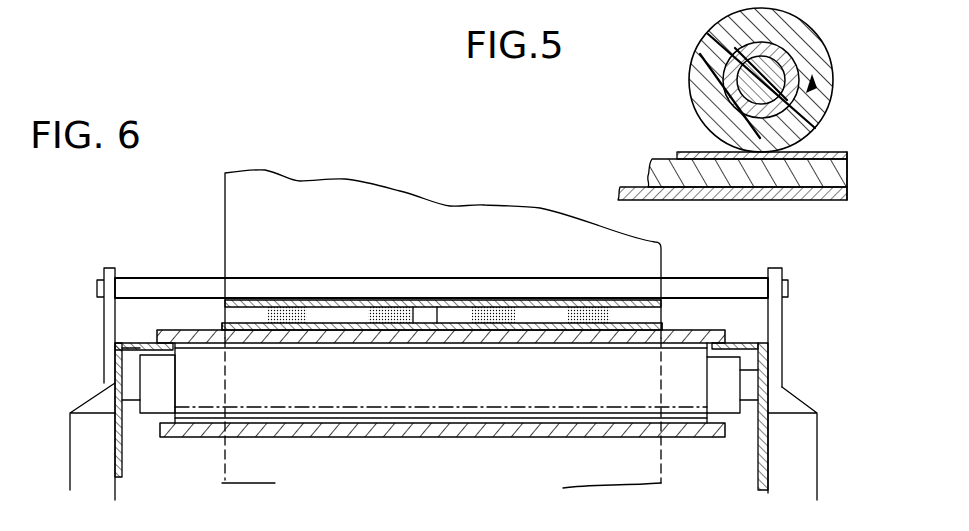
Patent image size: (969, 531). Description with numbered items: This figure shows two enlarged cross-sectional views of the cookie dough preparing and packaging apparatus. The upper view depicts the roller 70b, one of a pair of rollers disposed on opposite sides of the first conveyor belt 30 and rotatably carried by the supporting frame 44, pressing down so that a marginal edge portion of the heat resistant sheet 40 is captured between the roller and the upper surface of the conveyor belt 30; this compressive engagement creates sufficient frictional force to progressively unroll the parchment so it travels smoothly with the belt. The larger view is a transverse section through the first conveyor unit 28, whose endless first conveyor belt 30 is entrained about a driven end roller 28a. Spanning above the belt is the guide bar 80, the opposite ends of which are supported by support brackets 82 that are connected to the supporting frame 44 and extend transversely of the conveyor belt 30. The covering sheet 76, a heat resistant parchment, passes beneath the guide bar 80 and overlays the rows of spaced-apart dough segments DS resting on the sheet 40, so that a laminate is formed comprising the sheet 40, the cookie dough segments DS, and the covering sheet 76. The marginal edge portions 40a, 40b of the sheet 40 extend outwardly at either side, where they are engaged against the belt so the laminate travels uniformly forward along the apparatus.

In FIG. 5, the roller 70b is at (807, 44).
In FIG. 5, the first conveyor belt 30 is at (668, 167).
In FIG. 6, the first conveyor belt 30 is at (255, 432).
In FIG. 5, the length of heat resistant sheet material 40 is at (818, 152).
In FIG. 6, the length of heat resistant sheet material 40 is at (439, 324).
In FIG. 6, the marginal edge portion of sheet 40a is at (226, 325).
In FIG. 6, the marginal edge portion of sheet 40b is at (662, 327).
In FIG. 6, the covering sheet 76 is at (452, 217).
In FIG. 6, the guide bar 80 is at (157, 285).
In FIG. 6, the support brackets 82 is at (104, 318).
In FIG. 6, the supporting frame 44 is at (70, 467).
In FIG. 6, the first conveyor unit 28 is at (140, 373).
In FIG. 6, the end roller 28a is at (154, 405).
In FIG. 6, the dough segments DS is at (281, 310).